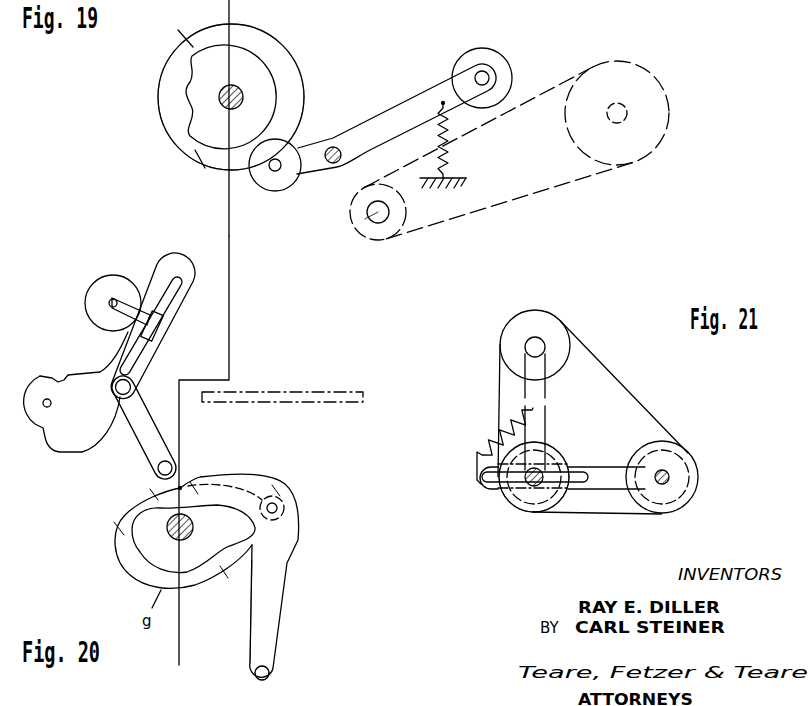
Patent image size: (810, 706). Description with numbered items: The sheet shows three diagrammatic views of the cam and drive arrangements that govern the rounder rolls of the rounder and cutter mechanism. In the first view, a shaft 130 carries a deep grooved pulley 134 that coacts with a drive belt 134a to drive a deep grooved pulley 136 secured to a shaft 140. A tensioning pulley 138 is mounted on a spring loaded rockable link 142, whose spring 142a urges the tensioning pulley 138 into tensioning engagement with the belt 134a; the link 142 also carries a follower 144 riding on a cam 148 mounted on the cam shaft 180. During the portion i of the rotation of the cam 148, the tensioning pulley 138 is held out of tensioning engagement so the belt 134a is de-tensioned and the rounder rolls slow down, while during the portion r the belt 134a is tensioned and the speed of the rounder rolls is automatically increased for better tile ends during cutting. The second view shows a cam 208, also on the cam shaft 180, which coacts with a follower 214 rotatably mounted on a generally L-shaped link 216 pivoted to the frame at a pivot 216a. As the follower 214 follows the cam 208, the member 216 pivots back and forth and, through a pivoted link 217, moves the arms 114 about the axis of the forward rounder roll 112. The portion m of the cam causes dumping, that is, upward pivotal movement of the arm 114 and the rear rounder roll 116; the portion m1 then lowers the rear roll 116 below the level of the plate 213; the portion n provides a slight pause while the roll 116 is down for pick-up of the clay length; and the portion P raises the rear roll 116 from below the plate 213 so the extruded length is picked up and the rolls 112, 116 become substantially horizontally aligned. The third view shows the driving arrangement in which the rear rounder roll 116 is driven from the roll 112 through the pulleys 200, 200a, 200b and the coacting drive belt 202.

In FIG. 19, the portion of cam r is at (168, 93).
In FIG. 19, the portion of cam i is at (306, 88).
In FIG. 19, the cam 148 is at (265, 68).
In FIG. 19, the cam shaft 180 is at (223, 104).
In FIG. 20, the cam shaft 180 is at (170, 533).
In FIG. 19, the follower 144 is at (280, 187).
In FIG. 19, the spring loaded rockable link 142 is at (372, 121).
In FIG. 19, the spring 142a is at (450, 135).
In FIG. 19, the tensioning pulley 138 is at (495, 60).
In FIG. 19, the shaft 130 is at (367, 220).
In FIG. 19, the pulley 134 is at (378, 240).
In FIG. 19, the deep grooved pulley 136 is at (668, 125).
In FIG. 19, the shaft 140 is at (628, 109).
In FIG. 19, the drive belt 134a is at (578, 185).
In FIG. 20, the plate 213 is at (292, 390).
In FIG. 20, the rear rounder roll 116 is at (112, 283).
In FIG. 21, the rear rounder roll 116 is at (562, 453).
In FIG. 20, the arms 114 is at (158, 354).
In FIG. 21, the arms 114 is at (608, 493).
In FIG. 20, the forward rounder roll 112 is at (40, 373).
In FIG. 21, the forward rounder roll 112 is at (690, 470).
In FIG. 20, the pivoted link 217 is at (143, 447).
In FIG. 20, the cam 208 is at (155, 556).
In FIG. 20, the portion of cam P is at (130, 503).
In FIG. 20, the follower 214 is at (298, 502).
In FIG. 20, the L-shaped link 216 is at (287, 560).
In FIG. 20, the pivot 216a is at (270, 672).
In FIG. 20, the portion of cam m is at (282, 516).
In FIG. 20, the portion of cam m1 is at (253, 486).
In FIG. 20, the portion of cam n is at (181, 487).
In FIG. 21, the pulley 200b is at (551, 322).
In FIG. 21, the drive belt 202 is at (628, 393).
In FIG. 21, the pulley 200a is at (517, 512).
In FIG. 21, the pulley 200 is at (663, 442).